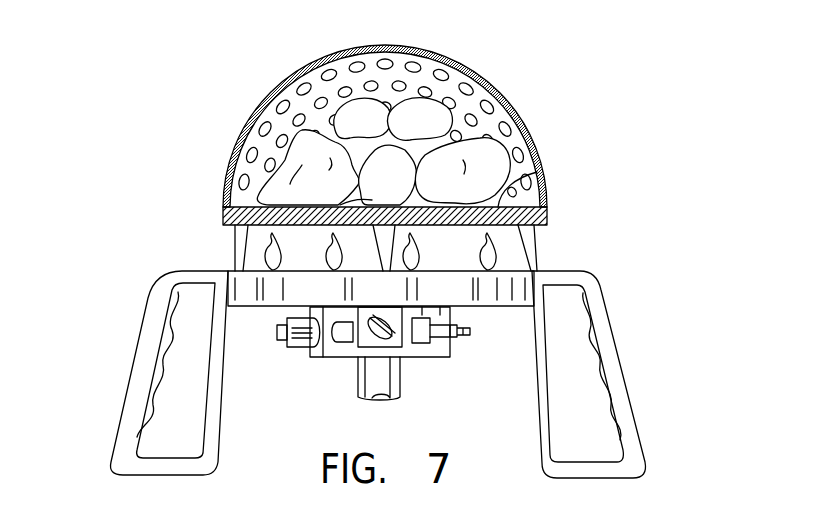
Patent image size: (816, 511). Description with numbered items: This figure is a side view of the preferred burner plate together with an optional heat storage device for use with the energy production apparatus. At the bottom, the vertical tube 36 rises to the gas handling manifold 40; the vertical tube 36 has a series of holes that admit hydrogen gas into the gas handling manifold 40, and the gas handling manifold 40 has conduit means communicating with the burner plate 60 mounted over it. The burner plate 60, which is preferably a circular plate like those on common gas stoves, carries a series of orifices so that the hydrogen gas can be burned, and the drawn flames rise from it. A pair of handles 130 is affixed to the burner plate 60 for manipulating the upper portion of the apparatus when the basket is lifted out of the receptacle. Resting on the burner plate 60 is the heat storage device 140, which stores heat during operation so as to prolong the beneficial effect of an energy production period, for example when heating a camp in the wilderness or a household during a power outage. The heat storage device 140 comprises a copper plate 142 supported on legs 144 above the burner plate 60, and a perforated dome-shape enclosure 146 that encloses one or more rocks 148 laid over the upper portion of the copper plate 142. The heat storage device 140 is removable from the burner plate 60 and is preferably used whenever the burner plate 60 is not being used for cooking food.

The heat storage device 140 is at (680, 97).
The perforated dome-shape enclosure 146 is at (517, 120).
The copper plate 142 is at (512, 190).
The rocks 148 is at (437, 120).
The legs 144 is at (233, 248).
The burner plate 60 is at (507, 270).
The gas handling manifold 40 is at (437, 357).
The vertical tube 36 is at (358, 375).
The handles 130 is at (143, 335).